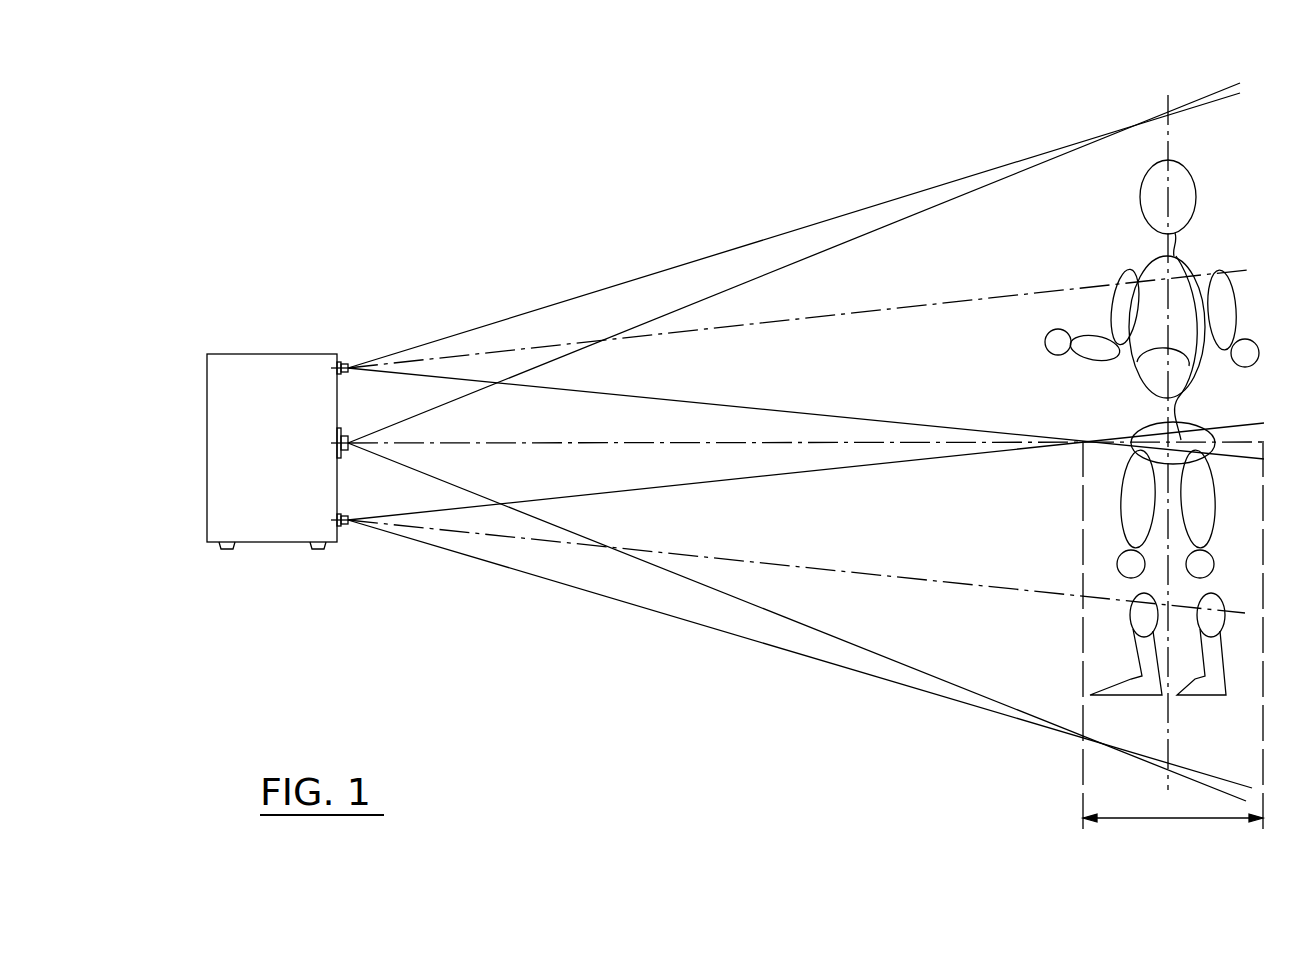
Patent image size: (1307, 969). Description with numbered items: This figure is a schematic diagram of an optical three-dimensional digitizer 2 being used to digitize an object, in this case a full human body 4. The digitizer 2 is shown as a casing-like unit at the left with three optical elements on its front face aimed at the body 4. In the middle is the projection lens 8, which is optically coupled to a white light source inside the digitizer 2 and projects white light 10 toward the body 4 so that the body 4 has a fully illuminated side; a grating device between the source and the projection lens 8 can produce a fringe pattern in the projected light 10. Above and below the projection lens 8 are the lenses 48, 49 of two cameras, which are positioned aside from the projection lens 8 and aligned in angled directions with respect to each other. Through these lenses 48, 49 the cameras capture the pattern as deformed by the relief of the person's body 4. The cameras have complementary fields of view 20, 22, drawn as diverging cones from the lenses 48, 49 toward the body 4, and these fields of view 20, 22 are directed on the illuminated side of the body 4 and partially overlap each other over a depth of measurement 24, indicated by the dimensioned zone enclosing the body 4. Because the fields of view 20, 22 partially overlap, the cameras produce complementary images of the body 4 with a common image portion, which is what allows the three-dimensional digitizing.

The optical 3D digitizer 2 is at (270, 338).
The human body 4 is at (1112, 102).
The projection lens 8 is at (348, 428).
The white light 10 is at (423, 465).
The field of view 20 is at (518, 328).
The field of view 22 is at (540, 572).
The depth of measurement 24 is at (1138, 822).
The camera lens 48 is at (350, 363).
The camera lens 49 is at (348, 527).